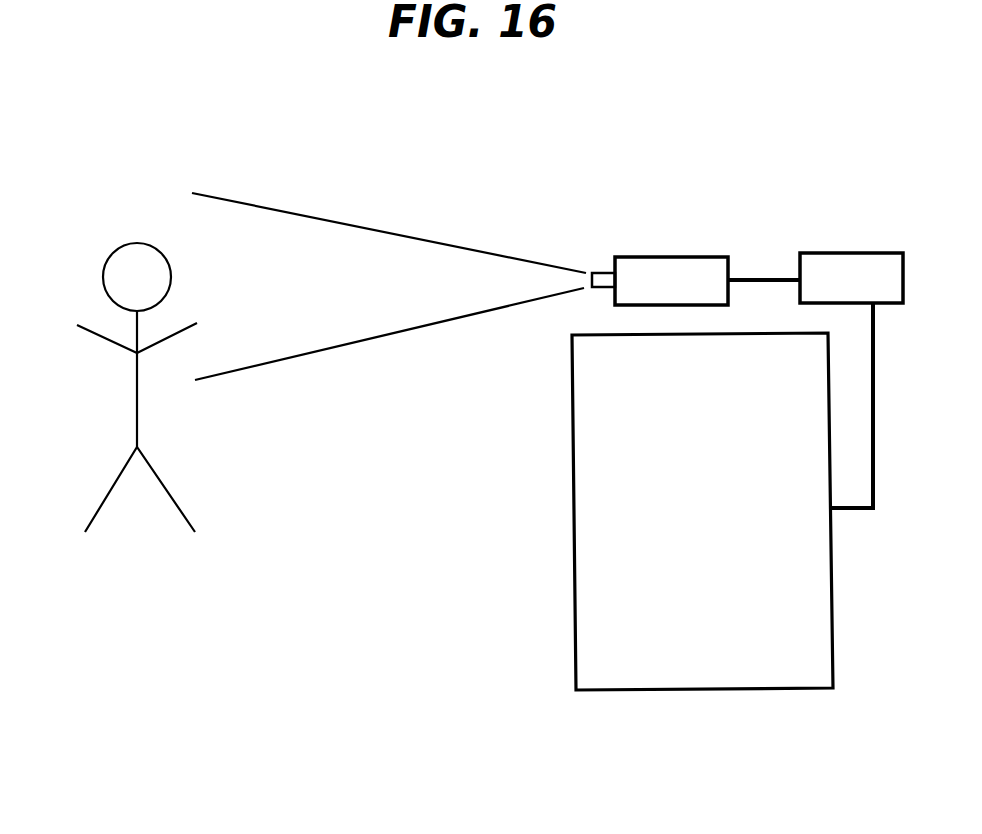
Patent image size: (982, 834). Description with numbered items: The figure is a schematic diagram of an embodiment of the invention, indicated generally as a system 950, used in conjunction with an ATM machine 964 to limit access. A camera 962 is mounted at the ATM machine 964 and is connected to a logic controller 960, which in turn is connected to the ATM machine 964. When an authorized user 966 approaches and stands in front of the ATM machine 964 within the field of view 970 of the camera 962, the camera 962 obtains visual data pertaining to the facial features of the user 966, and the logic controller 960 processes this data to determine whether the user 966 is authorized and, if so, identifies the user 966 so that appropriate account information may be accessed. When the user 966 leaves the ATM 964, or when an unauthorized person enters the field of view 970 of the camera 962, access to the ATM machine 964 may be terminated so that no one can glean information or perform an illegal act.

The ATM security system 950 is at (737, 138).
The logic controller 960 is at (843, 253).
The camera 962 is at (663, 257).
The ATM machine 964 is at (573, 468).
The user 966 is at (112, 252).
The field of view 970 is at (358, 227).